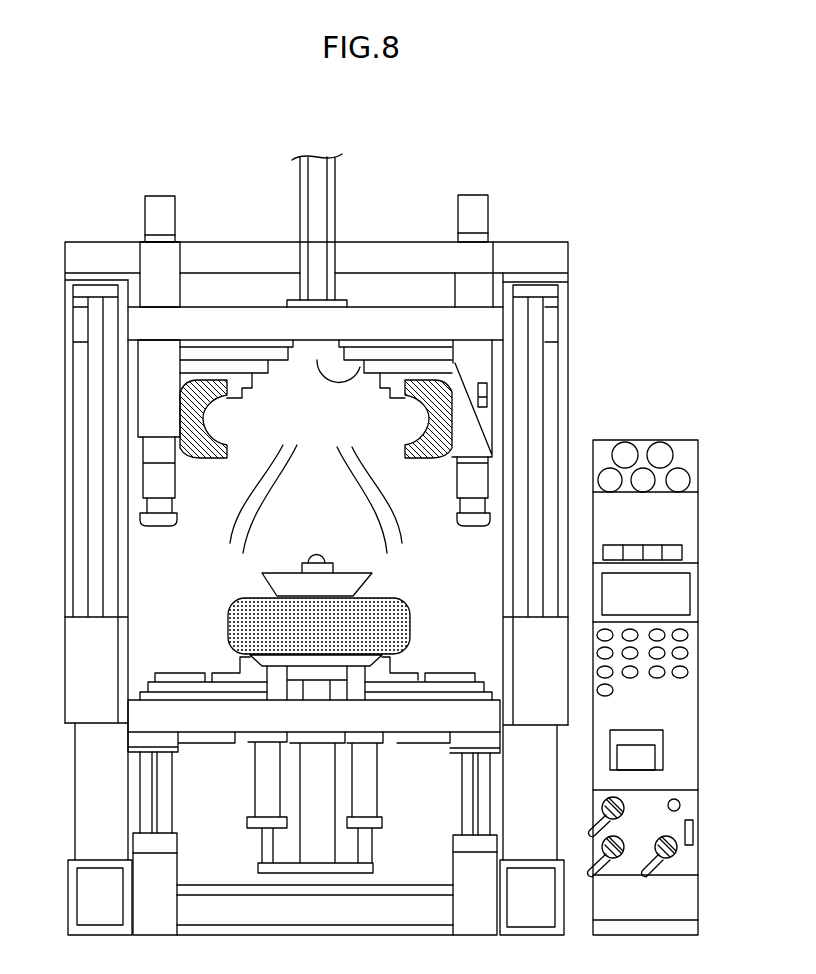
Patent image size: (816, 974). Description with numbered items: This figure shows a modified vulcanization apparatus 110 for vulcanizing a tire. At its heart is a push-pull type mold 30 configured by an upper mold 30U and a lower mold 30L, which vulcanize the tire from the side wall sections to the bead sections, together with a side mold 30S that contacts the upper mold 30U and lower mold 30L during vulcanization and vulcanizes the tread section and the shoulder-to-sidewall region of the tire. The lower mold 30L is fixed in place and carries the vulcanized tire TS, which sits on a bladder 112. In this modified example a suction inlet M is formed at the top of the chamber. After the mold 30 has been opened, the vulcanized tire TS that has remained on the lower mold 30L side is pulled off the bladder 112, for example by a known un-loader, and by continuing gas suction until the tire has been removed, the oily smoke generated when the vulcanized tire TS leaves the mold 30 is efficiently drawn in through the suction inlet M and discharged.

The vulcanization apparatus 110 is at (637, 165).
The suction inlet M is at (355, 368).
The upper mold 30U is at (238, 393).
The side mold 30S is at (412, 458).
The mold 30 is at (208, 619).
The lower mold 30L is at (240, 665).
The bladder 112 is at (362, 596).
The vulcanized tire TS is at (410, 622).